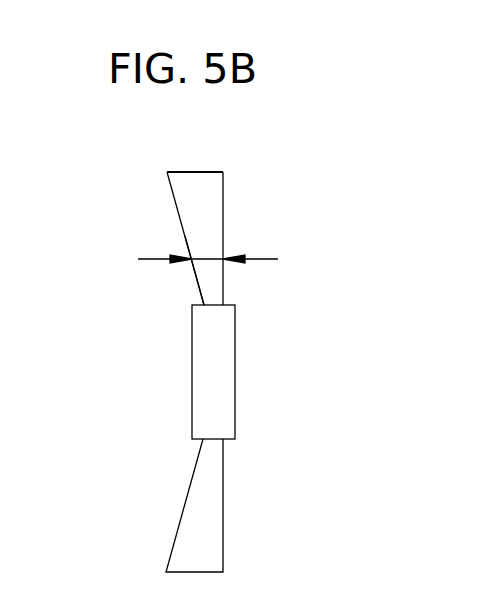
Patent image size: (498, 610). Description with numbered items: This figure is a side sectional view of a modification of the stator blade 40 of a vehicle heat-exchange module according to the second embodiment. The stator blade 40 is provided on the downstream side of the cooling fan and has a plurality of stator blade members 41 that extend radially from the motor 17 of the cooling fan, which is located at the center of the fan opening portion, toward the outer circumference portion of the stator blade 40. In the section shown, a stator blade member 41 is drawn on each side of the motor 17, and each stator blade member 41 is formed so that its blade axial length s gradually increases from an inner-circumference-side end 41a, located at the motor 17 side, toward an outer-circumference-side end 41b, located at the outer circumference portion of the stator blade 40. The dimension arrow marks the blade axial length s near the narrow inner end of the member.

The stator blade 40 is at (226, 173).
The stator blade member 41 is at (224, 222).
The inner-circumference-side end 41a is at (208, 292).
The outer-circumference-side end 41b is at (167, 172).
The motor 17 is at (220, 368).
The blade axial length s is at (208, 247).